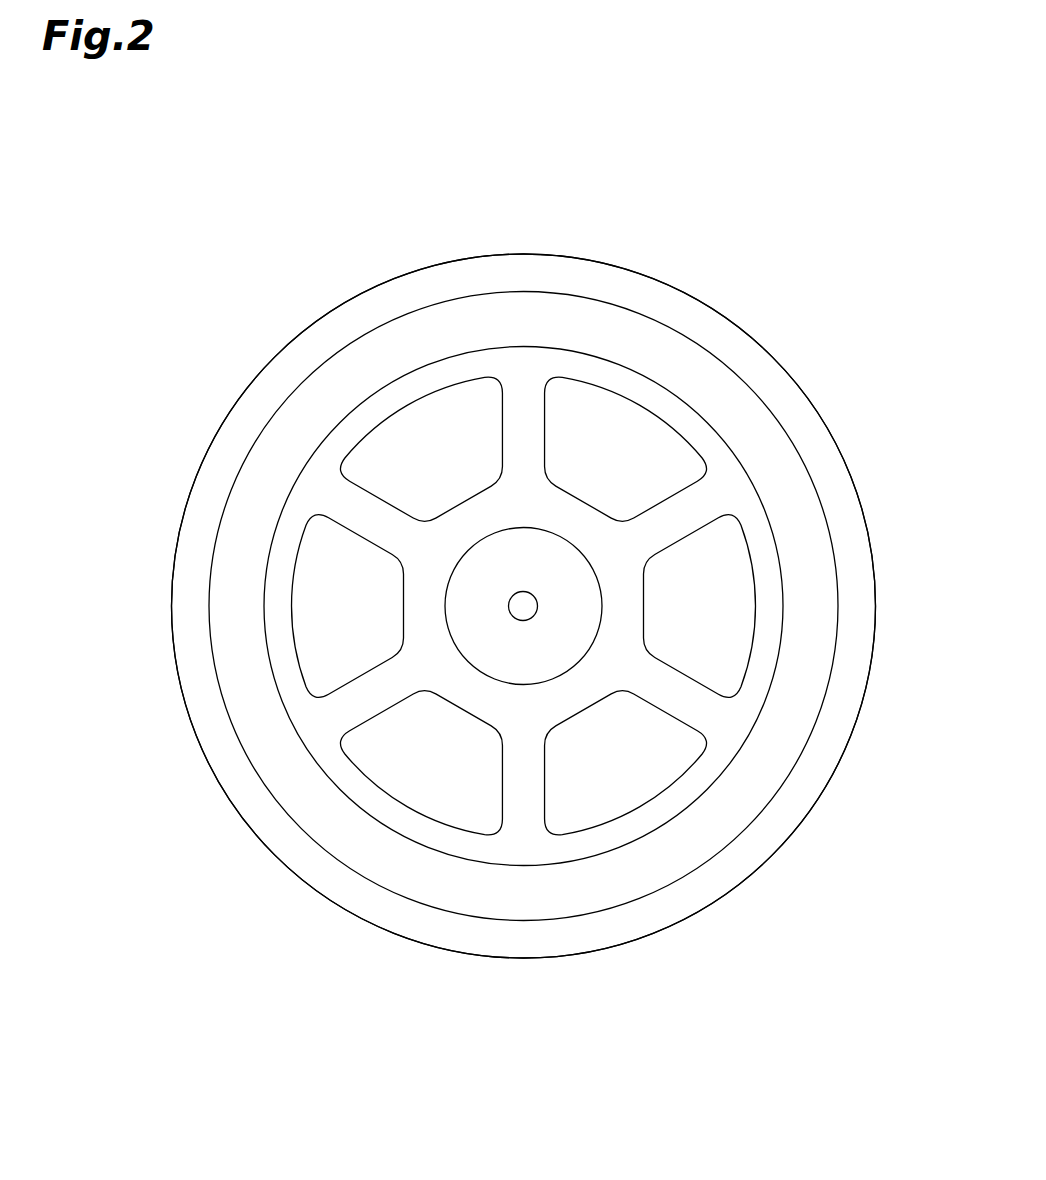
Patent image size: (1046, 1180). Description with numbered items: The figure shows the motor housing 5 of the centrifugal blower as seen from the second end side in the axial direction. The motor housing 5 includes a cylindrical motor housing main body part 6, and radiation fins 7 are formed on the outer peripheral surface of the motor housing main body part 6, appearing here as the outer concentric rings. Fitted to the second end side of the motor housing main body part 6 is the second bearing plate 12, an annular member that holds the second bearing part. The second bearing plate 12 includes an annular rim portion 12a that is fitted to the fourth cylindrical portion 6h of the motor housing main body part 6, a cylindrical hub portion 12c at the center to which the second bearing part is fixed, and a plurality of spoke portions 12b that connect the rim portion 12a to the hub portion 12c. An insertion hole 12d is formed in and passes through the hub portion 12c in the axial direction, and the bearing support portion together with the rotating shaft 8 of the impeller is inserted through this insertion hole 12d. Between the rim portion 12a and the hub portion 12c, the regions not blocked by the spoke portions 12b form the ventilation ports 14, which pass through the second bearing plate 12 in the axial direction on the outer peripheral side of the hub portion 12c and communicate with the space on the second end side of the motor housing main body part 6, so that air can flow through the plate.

The motor housing 5 is at (692, 292).
The motor housing main body part 6 is at (388, 320).
The fourth cylindrical portion 6h is at (393, 383).
The radiation fins 7 is at (238, 815).
The rotating shaft 8 is at (522, 607).
The second bearing plate 12 is at (556, 343).
The rim portion 12a is at (697, 432).
The spoke portions 12b is at (368, 514).
The hub portion 12c is at (622, 608).
The insertion hole 12d is at (453, 583).
The ventilation ports 14 is at (628, 460).